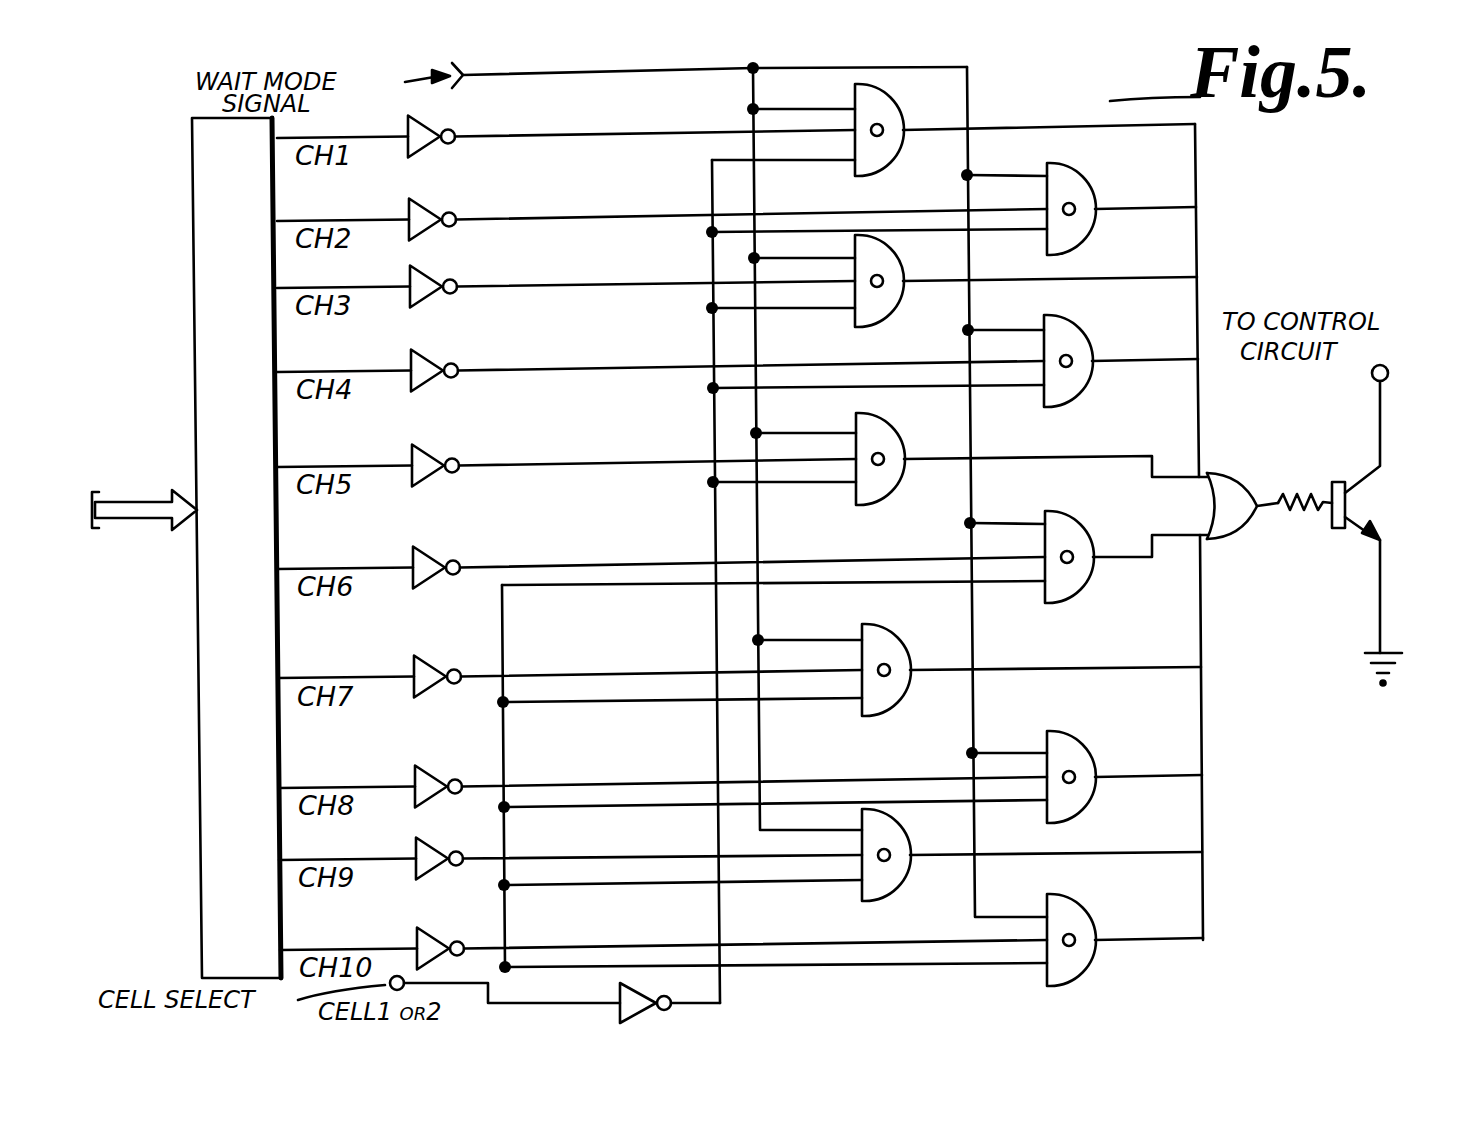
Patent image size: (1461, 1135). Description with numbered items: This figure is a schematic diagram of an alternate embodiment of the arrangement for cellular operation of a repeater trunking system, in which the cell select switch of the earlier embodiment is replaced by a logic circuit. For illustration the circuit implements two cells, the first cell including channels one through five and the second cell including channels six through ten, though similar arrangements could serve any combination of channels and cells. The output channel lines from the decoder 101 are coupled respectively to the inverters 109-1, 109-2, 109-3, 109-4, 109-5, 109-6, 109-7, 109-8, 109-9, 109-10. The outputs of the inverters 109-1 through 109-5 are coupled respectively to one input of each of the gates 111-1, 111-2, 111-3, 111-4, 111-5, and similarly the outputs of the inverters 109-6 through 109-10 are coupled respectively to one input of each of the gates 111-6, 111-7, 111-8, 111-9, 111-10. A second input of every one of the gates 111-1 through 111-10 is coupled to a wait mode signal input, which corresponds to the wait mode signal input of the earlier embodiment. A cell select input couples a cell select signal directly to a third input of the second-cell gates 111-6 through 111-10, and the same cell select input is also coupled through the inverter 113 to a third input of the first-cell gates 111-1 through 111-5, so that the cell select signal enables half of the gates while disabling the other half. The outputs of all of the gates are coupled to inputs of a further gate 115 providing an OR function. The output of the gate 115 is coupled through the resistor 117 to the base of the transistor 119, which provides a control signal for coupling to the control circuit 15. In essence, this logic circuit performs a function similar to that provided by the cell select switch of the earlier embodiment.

The decoder 101 is at (262, 725).
The inverter 109-1 is at (430, 135).
The inverter 109-2 is at (425, 232).
The inverter 109-3 is at (428, 298).
The inverter 109-4 is at (430, 383).
The inverter 109-5 is at (430, 478).
The inverter 109-6 is at (432, 580).
The inverter 109-7 is at (452, 652).
The inverter 109-8 is at (455, 755).
The inverter 109-9 is at (452, 838).
The inverter 109-10 is at (448, 922).
The gate 111-1 is at (917, 100).
The gate 111-2 is at (1073, 188).
The gate 111-3 is at (915, 258).
The gate 111-4 is at (1072, 338).
The gate 111-5 is at (920, 425).
The gate 111-6 is at (1068, 588).
The gate 111-7 is at (920, 628).
The gate 111-8 is at (1088, 735).
The gate 111-9 is at (925, 835).
The gate 111-10 is at (1108, 933).
The inverter 113 is at (618, 998).
The gate providing an OR function 115 is at (1232, 490).
The resistor 117 is at (1296, 520).
The transistor 119 is at (1358, 504).
The control circuit 15 is at (1405, 359).